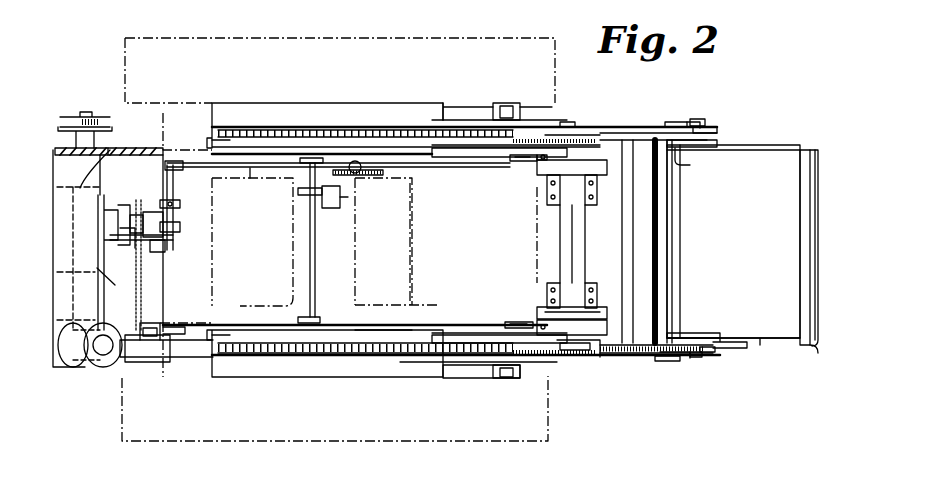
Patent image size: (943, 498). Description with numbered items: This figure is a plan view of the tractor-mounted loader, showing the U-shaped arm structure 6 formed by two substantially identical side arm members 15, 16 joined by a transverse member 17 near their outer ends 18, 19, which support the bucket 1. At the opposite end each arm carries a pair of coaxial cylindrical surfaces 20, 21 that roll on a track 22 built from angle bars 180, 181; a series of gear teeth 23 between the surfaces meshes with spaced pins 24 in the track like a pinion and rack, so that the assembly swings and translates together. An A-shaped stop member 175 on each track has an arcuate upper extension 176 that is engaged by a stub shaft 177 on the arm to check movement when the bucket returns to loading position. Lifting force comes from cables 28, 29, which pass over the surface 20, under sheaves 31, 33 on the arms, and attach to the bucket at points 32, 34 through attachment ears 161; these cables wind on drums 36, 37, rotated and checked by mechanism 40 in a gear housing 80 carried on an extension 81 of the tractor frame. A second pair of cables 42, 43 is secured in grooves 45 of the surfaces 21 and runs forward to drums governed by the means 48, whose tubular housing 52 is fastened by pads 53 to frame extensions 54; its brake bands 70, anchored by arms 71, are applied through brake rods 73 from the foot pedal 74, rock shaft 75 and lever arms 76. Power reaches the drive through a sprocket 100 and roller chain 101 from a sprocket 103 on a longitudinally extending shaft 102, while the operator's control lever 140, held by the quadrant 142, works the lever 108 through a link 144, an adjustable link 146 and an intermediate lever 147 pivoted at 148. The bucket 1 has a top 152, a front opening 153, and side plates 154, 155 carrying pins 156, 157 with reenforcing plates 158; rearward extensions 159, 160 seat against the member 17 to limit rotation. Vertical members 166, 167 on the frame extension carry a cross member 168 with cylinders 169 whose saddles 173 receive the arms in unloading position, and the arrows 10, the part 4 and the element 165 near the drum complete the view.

The bucket 1 is at (750, 217).
The side plate 4 is at (812, 200).
The arm structure 6 is at (622, 127).
The direction of travel 10 is at (407, 337).
The side arm member 15 is at (632, 357).
The side arm member 16 is at (634, 140).
The transverse member 17 is at (652, 203).
The outer end of arm 18 is at (710, 353).
The outer end of arm 19 is at (718, 131).
The cylindrical surface 20 is at (438, 119).
The cylindrical surface 21 is at (447, 150).
The track 22 is at (350, 126).
The gear teeth 23 is at (500, 143).
The pins 24 is at (277, 132).
The cable 28 is at (358, 353).
The cable 29 is at (383, 127).
The sheave 31 is at (582, 360).
The point of attachment 32 is at (668, 360).
The sheave 33 is at (617, 127).
The point of attachment 34 is at (683, 124).
The drum 36 is at (67, 365).
The drum 37 is at (64, 117).
The mechanism 40 is at (155, 212).
The cable 42 is at (570, 358).
The cable 43 is at (546, 138).
The groove 45 is at (472, 145).
The means for controlling rotation of drums 48 is at (563, 240).
The tubular housing 52 is at (586, 228).
The pads 53 is at (594, 287).
The extensions of frame 54 is at (556, 284).
The brake band 70 is at (555, 160).
The arm 71 is at (598, 178).
The brake rod 73 is at (378, 330).
The foot pedal 74 is at (330, 200).
The rock shaft 75 is at (316, 272).
The lever arm 76 is at (308, 158).
The gear housing 80 is at (100, 280).
The extension of tractor frame 81 is at (62, 165).
The sprocket 100 is at (138, 212).
The roller chain 101 is at (142, 288).
The longitudinally extending shaft 102 is at (198, 334).
The sprocket 103 is at (178, 332).
The lever 108 is at (118, 236).
The control lever 140 is at (358, 174).
The quadrant 142 is at (383, 172).
The link 144 is at (257, 168).
The adjustable link 146 is at (166, 250).
The intermediate lever 147 is at (176, 226).
The pivot 148 is at (172, 205).
The top of bucket 152 is at (769, 148).
The front opening of bucket 153 is at (803, 177).
The side plate 154 is at (778, 340).
The side plate 155 is at (791, 150).
The pin 156 is at (698, 358).
The pin 157 is at (702, 121).
The reenforcing plates 158 is at (720, 144).
The rearward extension 159 is at (688, 337).
The rearward extension 160 is at (690, 168).
The attachment ears 161 is at (676, 123).
The motor 165 is at (90, 374).
The vertical member 166 is at (168, 328).
The vertical member 167 is at (110, 152).
The cross member 168 is at (110, 150).
The cylinder 169 is at (120, 338).
The saddle 173 is at (130, 362).
The stop member 175 is at (459, 110).
The arcuate upper extension 176 is at (515, 107).
The stub shaft 177 is at (500, 103).
The angle bar 180 is at (230, 110).
The angle bar 181 is at (212, 143).